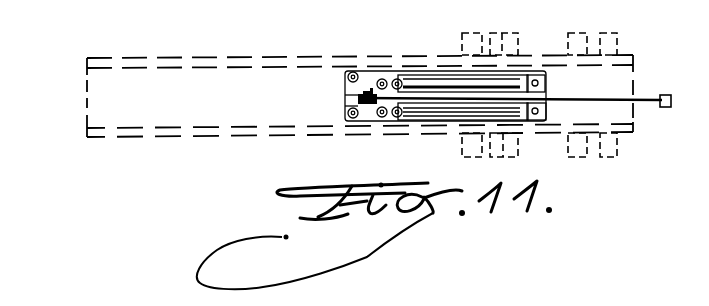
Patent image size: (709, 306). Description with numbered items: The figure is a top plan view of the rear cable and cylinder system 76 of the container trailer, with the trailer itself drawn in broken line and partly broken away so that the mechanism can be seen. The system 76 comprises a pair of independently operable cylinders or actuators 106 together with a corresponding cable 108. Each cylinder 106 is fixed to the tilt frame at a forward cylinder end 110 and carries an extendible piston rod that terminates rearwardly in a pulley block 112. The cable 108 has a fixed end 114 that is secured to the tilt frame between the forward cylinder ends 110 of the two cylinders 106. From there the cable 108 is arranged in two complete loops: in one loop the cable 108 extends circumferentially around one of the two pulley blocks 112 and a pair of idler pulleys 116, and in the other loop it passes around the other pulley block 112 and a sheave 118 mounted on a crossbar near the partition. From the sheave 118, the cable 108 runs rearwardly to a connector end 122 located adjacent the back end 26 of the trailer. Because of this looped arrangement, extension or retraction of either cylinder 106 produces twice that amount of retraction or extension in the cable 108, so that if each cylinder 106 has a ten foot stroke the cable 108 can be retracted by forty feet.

The back end 26 is at (635, 125).
The rear cable and cylinder system 76 is at (390, 43).
The cylinder 106 is at (446, 84).
The cable 108 is at (580, 98).
The forward cylinder end 110 is at (397, 79).
The pulley block 112 is at (534, 78).
The fixed end 114 is at (371, 92).
The idler pulleys 116 is at (384, 114).
The sheave 118 is at (358, 99).
The connector end 122 is at (662, 96).